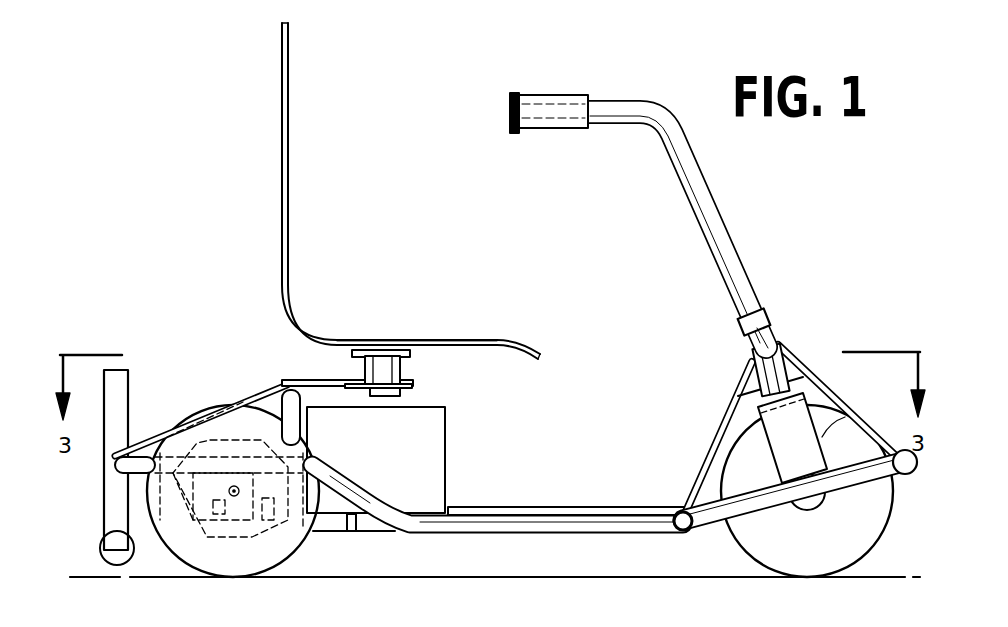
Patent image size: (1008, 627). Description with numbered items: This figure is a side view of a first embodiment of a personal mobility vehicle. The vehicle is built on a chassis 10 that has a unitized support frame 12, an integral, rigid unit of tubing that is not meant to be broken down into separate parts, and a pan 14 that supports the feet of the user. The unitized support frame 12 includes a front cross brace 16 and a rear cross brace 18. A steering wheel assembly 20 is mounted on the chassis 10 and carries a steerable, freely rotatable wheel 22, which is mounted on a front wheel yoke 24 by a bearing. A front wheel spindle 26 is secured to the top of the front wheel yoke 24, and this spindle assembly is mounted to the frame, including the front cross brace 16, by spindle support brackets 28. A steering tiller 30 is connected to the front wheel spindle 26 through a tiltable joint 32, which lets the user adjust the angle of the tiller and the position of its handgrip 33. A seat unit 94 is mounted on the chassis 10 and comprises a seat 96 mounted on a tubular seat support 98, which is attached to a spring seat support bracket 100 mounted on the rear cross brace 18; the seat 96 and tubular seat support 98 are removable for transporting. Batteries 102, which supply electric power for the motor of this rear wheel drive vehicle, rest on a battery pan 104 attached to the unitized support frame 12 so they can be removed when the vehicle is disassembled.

The chassis 10 is at (550, 543).
The unitized support frame 12 is at (636, 531).
The pan 14 is at (545, 507).
The front cross brace 16 is at (686, 531).
The rear cross brace 18 is at (282, 385).
The steering wheel assembly 20 is at (792, 318).
The wheel 22 is at (893, 504).
The front wheel yoke 24 is at (848, 402).
The front wheel spindle 26 is at (788, 345).
The spindle support brackets 28 is at (832, 388).
The steering tiller 30 is at (703, 182).
The tiltable joint 32 is at (741, 317).
The handgrip 33 is at (542, 130).
The seat unit 94 is at (336, 288).
The seat 96 is at (320, 335).
The tubular seat support 98 is at (410, 365).
The spring seat support bracket 100 is at (330, 381).
The batteries 102 is at (446, 447).
The battery pan 104 is at (367, 533).